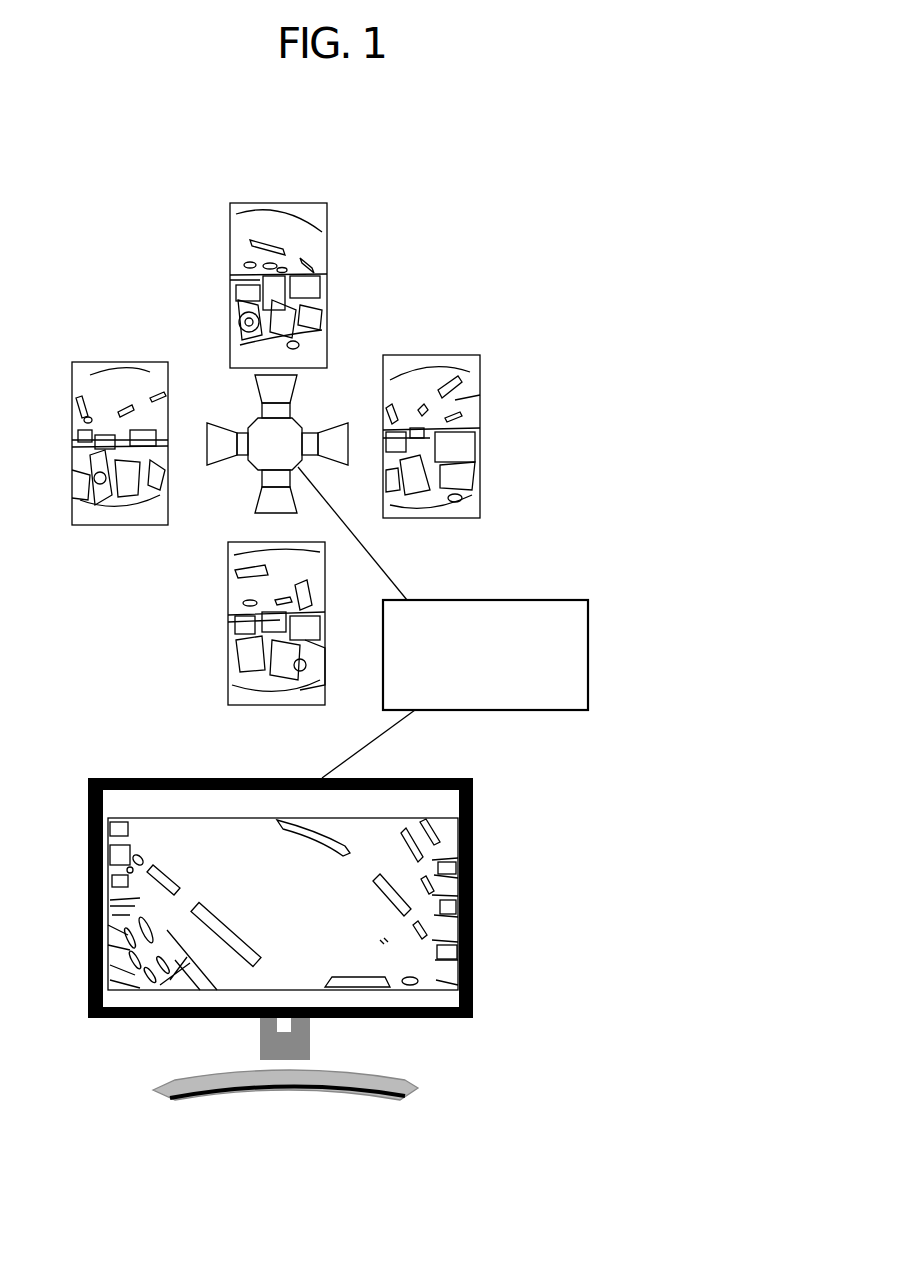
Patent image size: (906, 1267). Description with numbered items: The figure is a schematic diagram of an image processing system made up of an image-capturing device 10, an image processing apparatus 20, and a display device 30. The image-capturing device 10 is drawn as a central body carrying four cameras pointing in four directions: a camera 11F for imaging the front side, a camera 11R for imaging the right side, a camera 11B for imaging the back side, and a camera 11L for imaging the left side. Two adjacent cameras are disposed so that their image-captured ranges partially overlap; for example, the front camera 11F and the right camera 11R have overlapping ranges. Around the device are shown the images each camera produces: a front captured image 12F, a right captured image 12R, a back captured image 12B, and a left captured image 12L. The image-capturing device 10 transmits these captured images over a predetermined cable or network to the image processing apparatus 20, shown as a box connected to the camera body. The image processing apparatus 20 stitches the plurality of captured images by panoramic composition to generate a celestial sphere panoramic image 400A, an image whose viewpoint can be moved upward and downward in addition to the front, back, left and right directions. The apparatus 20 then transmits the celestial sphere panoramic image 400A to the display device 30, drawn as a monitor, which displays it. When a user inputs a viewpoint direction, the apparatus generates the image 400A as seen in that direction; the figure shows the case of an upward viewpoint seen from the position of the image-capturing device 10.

The image-capturing device 10 is at (252, 468).
The camera 11F is at (259, 393).
The camera 11B is at (292, 497).
The camera 11L is at (213, 465).
The camera 11R is at (341, 423).
The captured image 12F is at (316, 203).
The captured image 12B is at (242, 705).
The captured image 12L is at (147, 362).
The captured image 12R is at (457, 355).
The image processing apparatus 20 is at (540, 600).
The display device 30 is at (110, 778).
The celestial sphere panoramic image 400A is at (150, 815).